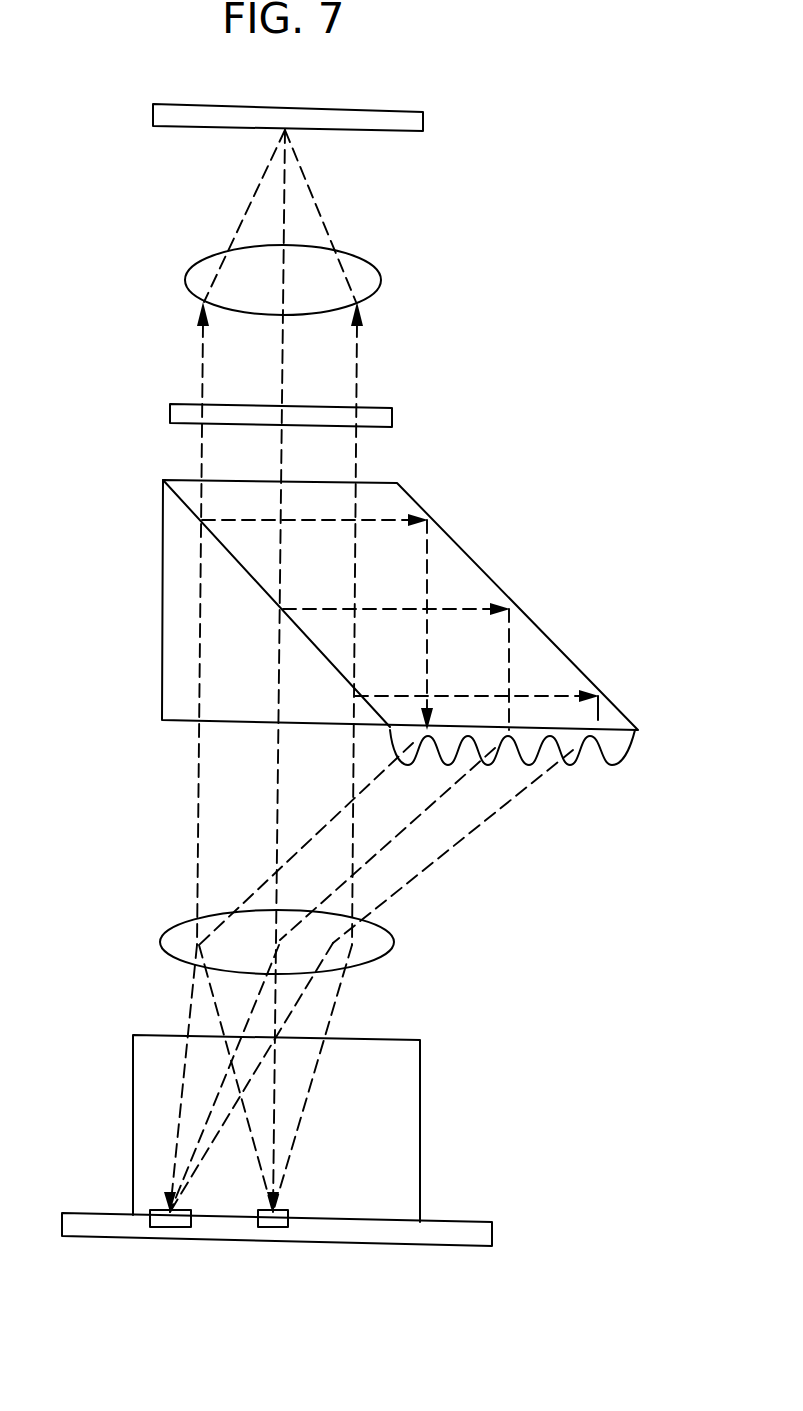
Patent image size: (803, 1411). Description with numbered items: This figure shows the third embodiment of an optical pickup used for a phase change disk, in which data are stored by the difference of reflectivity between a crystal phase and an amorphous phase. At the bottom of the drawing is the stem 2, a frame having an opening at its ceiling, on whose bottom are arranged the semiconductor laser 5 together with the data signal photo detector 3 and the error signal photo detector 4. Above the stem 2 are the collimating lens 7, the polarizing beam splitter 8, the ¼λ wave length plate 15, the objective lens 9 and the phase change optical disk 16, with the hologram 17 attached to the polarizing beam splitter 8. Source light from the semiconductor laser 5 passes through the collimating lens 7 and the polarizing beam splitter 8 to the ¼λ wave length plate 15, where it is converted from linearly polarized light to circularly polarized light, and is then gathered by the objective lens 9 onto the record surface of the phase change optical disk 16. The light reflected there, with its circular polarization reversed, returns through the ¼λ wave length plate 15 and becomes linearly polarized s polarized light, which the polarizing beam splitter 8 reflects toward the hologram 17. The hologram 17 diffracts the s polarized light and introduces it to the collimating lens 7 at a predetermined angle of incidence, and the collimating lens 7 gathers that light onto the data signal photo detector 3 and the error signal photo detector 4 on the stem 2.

The stem 2 is at (452, 1220).
The data signal photo detector 3 is at (159, 1269).
The error signal photo detector 4 is at (168, 1228).
The semiconductor laser 5 is at (273, 1228).
The collimating lens 7 is at (378, 943).
The polarizing beam splitter 8 is at (450, 563).
The objective lens 9 is at (367, 280).
The ¼λ wave length plate 15 is at (378, 416).
The phase change optical disk 16 is at (412, 122).
The hologram 17 is at (615, 753).